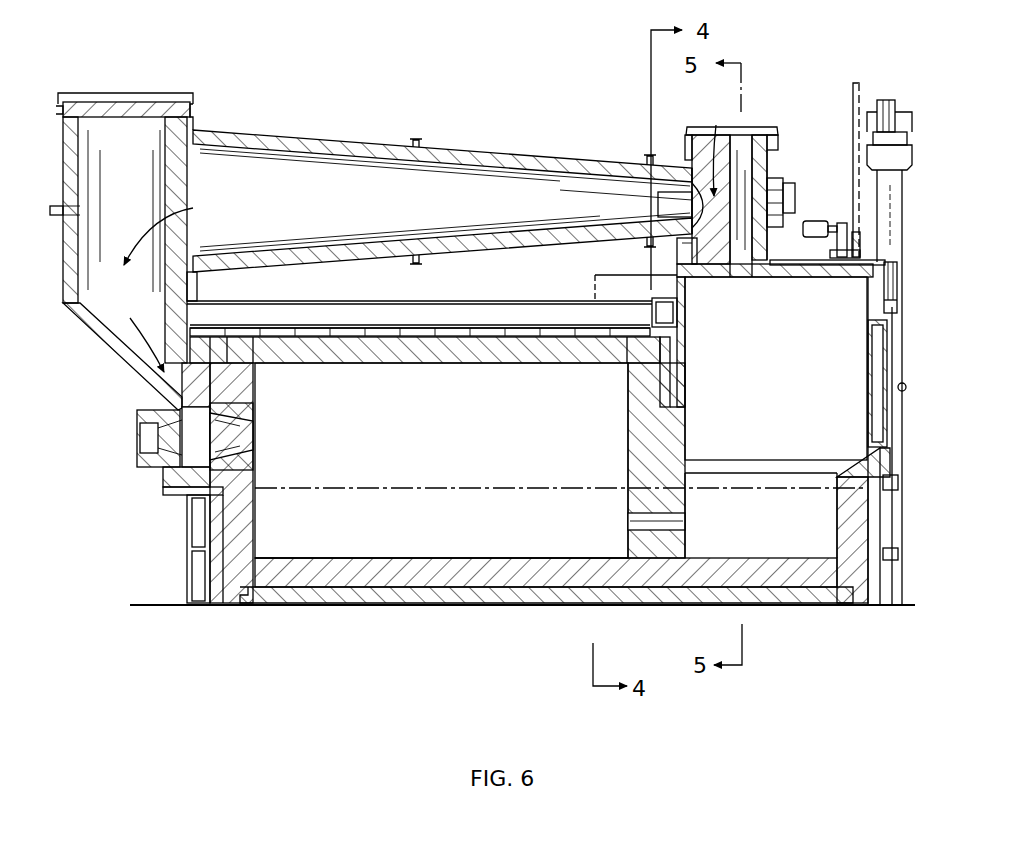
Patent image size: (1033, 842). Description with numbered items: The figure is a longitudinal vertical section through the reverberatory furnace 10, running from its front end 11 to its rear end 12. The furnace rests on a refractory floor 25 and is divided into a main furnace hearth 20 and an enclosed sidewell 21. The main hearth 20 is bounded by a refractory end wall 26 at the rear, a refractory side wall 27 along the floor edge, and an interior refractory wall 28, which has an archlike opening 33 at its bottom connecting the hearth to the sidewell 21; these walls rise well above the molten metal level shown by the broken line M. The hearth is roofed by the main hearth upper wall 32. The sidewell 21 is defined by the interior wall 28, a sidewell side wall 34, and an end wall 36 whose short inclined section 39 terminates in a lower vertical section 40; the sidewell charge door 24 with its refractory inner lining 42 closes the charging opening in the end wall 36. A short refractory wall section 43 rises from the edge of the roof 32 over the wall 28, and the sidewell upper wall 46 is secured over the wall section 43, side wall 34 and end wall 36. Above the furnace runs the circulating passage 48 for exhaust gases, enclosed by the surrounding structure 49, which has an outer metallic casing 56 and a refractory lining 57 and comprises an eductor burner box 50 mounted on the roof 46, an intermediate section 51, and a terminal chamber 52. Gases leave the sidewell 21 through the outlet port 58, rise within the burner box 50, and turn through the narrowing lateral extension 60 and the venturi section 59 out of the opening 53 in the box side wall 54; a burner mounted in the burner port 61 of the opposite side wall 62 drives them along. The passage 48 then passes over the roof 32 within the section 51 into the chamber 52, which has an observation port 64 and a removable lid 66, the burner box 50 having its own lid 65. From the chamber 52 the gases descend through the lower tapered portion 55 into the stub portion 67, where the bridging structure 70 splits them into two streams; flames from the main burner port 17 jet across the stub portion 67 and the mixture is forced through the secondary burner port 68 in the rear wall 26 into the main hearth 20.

The reverberatory furnace 10 is at (426, 97).
The front end 11 is at (908, 318).
The rear end 12 is at (164, 534).
The burner port 17 is at (165, 440).
The main furnace hearth 20 is at (452, 452).
The sidewell 21 is at (793, 422).
The sidewell charge door 24 is at (900, 356).
The floor 25 is at (513, 566).
The end wall 26 is at (248, 531).
The side wall 27 is at (441, 533).
The interior refractory wall 28 is at (689, 433).
The main hearth upper wall 32 is at (408, 364).
The archlike opening 33 is at (662, 525).
The sidewell side wall 34 is at (772, 368).
The end wall 36 is at (882, 289).
The inclined section 39 is at (862, 463).
The lower vertical section 40 is at (851, 530).
The inner lining 42 is at (880, 411).
The refractory wall section 43 is at (676, 280).
The sidewell upper wall 46 is at (797, 277).
The circulating passage 48 is at (492, 200).
The surrounding structure 49 is at (664, 166).
The eductor burner box 50 is at (786, 135).
The intermediate section 51 is at (455, 148).
The terminal chamber 52 is at (61, 160).
The opening 53 is at (680, 201).
The side wall 54 is at (712, 276).
The lower tapered portion 55 is at (126, 378).
The outer metallic casing 56 is at (297, 140).
The refractory lining 57 is at (242, 146).
The outlet port 58 is at (690, 250).
The venturi section 59 is at (661, 191).
The narrowing lateral extension 60 is at (707, 182).
The burner port 61 is at (786, 200).
The side wall 62 is at (771, 163).
The observation port 64 is at (61, 216).
The removable lid 65 is at (757, 127).
The removable lid 66 is at (121, 94).
The stub portion 67 is at (176, 473).
The secondary burner port 68 is at (243, 437).
The bridging structure 70 is at (201, 408).
The molten metal level M is at (384, 486).